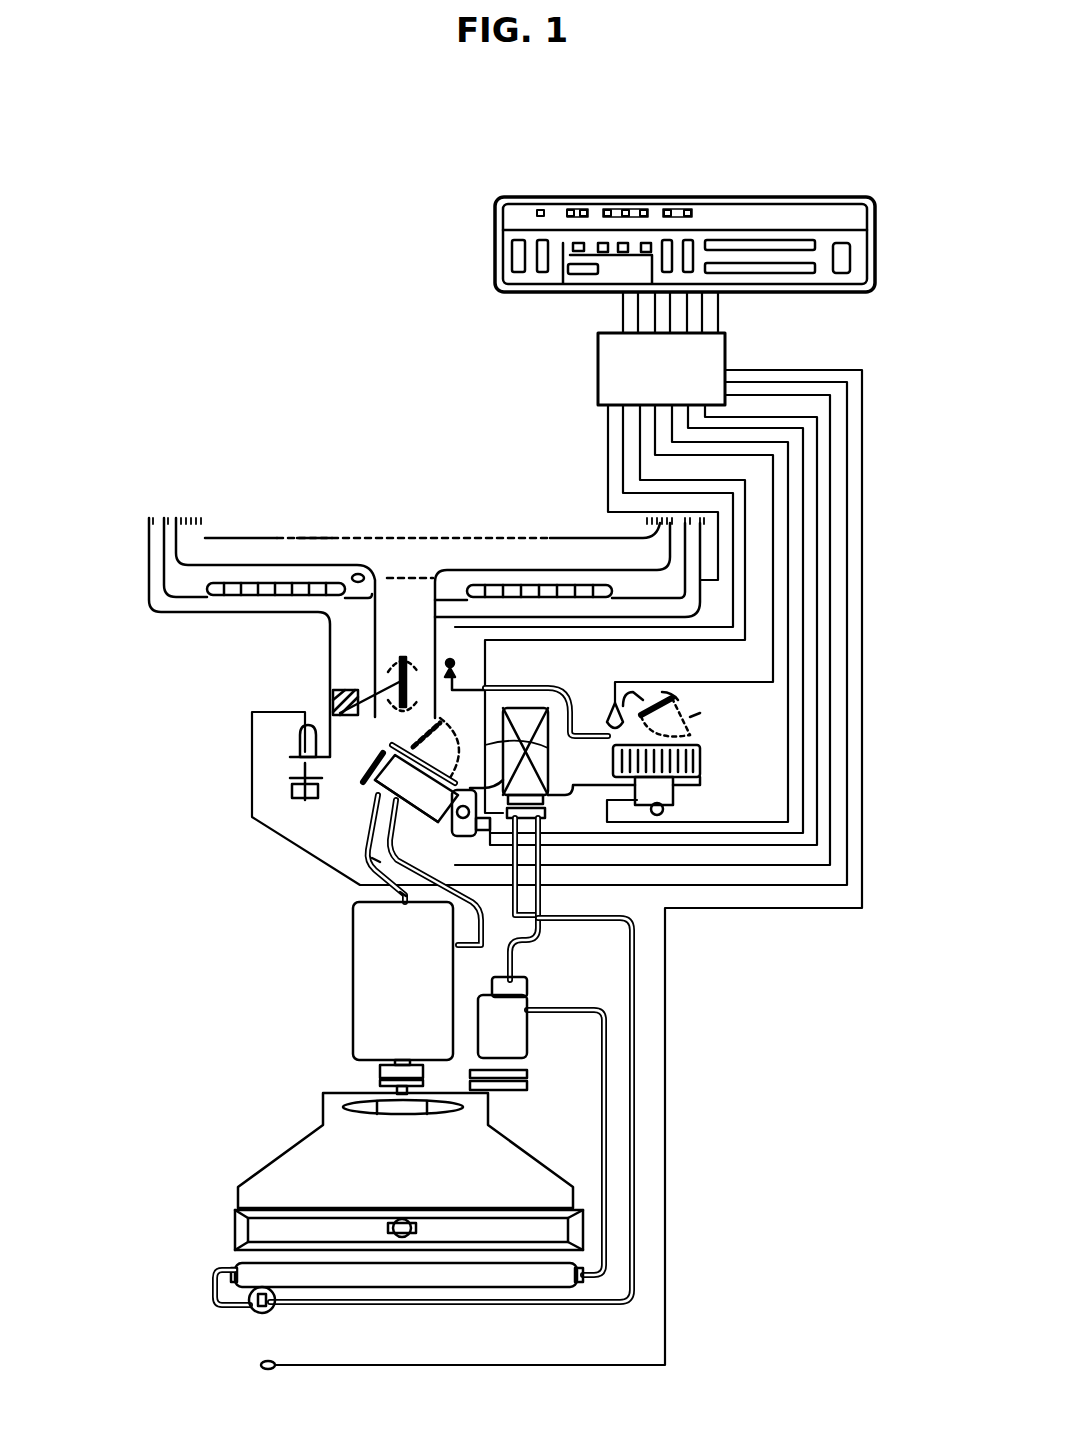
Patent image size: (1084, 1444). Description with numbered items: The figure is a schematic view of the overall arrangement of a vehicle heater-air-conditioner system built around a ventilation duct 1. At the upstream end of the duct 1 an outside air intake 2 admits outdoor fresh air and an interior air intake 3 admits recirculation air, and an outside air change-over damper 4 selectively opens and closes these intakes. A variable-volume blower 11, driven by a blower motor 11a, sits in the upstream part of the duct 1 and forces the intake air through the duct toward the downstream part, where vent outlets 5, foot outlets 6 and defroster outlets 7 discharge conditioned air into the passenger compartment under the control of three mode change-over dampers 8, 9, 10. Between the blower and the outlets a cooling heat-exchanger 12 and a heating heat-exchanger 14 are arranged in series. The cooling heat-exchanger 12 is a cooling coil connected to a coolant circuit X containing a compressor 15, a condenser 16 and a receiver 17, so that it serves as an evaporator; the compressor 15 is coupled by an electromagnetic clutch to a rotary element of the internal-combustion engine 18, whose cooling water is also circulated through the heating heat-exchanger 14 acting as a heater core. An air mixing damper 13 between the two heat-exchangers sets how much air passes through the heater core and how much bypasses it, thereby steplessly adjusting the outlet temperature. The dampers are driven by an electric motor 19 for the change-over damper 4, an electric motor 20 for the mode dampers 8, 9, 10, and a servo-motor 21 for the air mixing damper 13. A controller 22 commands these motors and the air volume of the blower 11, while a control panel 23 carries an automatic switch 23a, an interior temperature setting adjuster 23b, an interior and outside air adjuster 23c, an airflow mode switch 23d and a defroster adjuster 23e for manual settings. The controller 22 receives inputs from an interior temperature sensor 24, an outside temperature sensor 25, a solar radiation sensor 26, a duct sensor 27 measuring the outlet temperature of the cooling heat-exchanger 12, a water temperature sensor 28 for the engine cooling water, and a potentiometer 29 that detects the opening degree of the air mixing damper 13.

The ventilation duct 1 is at (320, 800).
The outside air intake 2 is at (690, 717).
The interior air intake 3 is at (672, 698).
The outside air change-over damper 4 is at (640, 693).
The vent outlets 5 is at (417, 553).
The foot outlets 6 is at (290, 772).
The defroster outlets 7 is at (149, 578).
The mode change-over damper 8 is at (402, 655).
The mode change-over damper 9 is at (292, 792).
The mode change-over damper 10 is at (330, 690).
The blower 11 is at (700, 760).
The blower motor 11a is at (673, 800).
The cooling heat-exchanger 12 is at (525, 708).
The air mixing damper 13 is at (372, 752).
The heating heat-exchanger 14 is at (368, 812).
The compressor 15 is at (530, 1062).
The condenser 16 is at (235, 1262).
The receiver 17 is at (249, 1318).
The internal-combustion engine 18 is at (353, 1024).
The electric motor 19 is at (608, 712).
The electric motor 20 is at (305, 728).
The servo-motor 21 is at (450, 783).
The controller 22 is at (598, 375).
The control panel 23 is at (800, 197).
The automatic switch 23a is at (580, 276).
The interior temperature setting adjuster 23b is at (845, 243).
The interior and outside air adjuster 23c is at (575, 208).
The airflow mode switch 23d is at (612, 208).
The defroster adjuster 23e is at (688, 208).
The interior temperature sensor 24 is at (452, 660).
The outside temperature sensor 25 is at (275, 1360).
The solar radiation sensor 26 is at (355, 574).
The duct sensor 27 is at (550, 758).
The water temperature sensor 28 is at (392, 858).
The potentiometer 29 is at (402, 893).
The coolant circuit X is at (648, 1046).